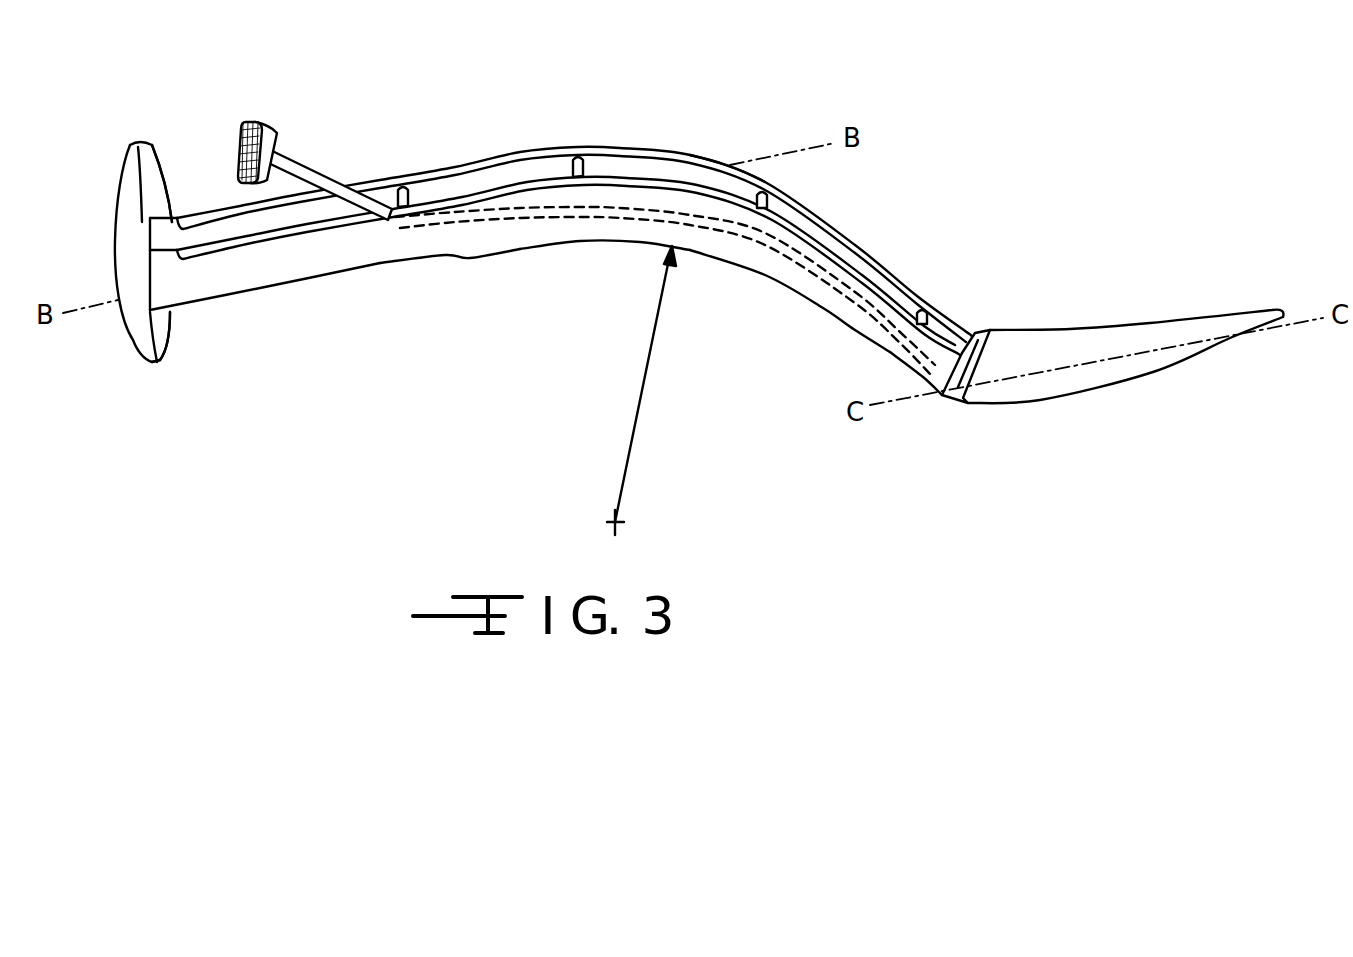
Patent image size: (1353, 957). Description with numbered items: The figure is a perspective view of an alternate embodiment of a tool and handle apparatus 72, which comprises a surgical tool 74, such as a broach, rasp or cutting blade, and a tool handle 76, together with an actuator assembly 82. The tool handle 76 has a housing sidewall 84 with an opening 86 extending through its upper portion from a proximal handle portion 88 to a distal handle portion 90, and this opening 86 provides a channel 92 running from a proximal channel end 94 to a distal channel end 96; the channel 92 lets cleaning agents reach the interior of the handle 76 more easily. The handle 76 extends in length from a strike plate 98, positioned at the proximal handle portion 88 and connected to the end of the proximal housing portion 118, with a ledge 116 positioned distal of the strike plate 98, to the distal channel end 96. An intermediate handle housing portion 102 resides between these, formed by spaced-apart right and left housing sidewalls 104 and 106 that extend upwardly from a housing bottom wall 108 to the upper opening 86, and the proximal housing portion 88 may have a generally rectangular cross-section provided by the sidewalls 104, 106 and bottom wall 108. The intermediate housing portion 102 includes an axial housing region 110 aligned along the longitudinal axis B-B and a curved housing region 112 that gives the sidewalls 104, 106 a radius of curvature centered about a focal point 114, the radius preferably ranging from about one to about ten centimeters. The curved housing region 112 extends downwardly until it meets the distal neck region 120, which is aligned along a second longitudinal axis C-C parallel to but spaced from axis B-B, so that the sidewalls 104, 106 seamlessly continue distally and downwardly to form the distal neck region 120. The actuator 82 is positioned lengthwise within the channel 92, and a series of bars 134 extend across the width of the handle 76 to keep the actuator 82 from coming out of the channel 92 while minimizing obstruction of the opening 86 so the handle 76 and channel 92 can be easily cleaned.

The tool and handle apparatus 72 is at (998, 180).
The surgical tool 74 is at (1067, 363).
The tool handle 76 is at (503, 242).
The actuator assembly 82 is at (652, 207).
The housing sidewall 84 is at (532, 152).
The opening 86 is at (843, 250).
The proximal handle portion 88 is at (230, 280).
The distal handle portion 90 is at (958, 328).
The channel 92 is at (620, 163).
The proximal channel end 94 is at (197, 242).
The distal channel end 96 is at (941, 396).
The strike plate 98 is at (130, 161).
The intermediate handle housing portion 102 is at (693, 244).
The right housing sidewall 104 is at (780, 283).
The left housing sidewall 106 is at (713, 163).
The housing bottom wall 108 is at (580, 243).
The axial housing region 110 is at (302, 270).
The curved housing region 112 is at (750, 279).
The focal point 114 is at (615, 517).
The ledge 116 is at (162, 232).
The proximal housing portion end 118 is at (172, 333).
The distal neck region 120 is at (921, 366).
The bars 134 is at (580, 152).